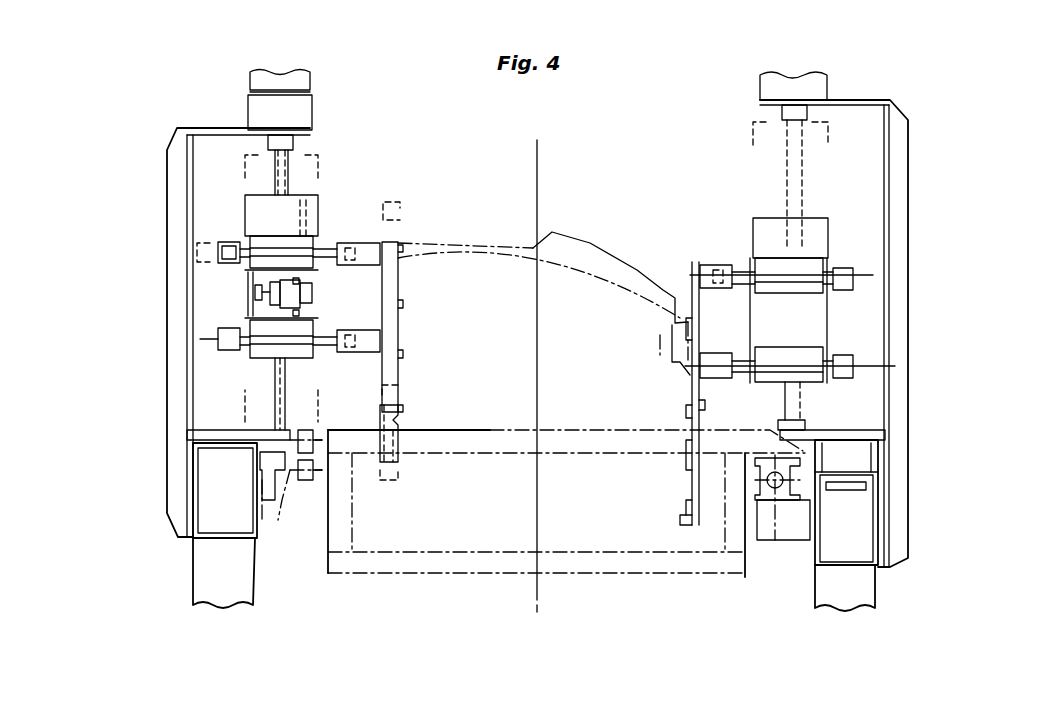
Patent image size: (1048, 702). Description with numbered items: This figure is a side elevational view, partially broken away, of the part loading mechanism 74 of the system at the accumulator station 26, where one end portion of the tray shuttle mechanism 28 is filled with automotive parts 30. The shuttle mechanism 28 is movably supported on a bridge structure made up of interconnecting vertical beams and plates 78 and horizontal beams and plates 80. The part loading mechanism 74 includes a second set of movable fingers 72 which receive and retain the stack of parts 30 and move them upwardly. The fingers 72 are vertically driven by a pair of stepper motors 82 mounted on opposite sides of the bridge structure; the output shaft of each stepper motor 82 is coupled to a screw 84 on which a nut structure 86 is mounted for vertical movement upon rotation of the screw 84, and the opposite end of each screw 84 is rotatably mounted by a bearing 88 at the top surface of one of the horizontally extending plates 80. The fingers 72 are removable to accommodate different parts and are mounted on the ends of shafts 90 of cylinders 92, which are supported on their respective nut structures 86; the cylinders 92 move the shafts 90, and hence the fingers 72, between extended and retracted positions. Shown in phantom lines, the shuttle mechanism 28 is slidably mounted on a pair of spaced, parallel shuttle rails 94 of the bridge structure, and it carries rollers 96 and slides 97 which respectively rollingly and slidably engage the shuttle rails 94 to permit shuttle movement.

The accumulator station 26 is at (663, 262).
The tray shuttle mechanism 28 is at (713, 577).
The automotive parts 30 is at (523, 252).
The second set of movable fingers 72 is at (398, 425).
The part loading mechanism 74 is at (957, 122).
The vertical beams and plates 78 is at (167, 200).
The horizontal beams and plates 80 is at (220, 128).
The stepper motors 82 is at (310, 82).
The screw 84 is at (290, 385).
The nut structure 86 is at (318, 200).
The bearing 88 is at (300, 430).
The shafts 90 is at (325, 330).
The cylinders 92 is at (262, 236).
The shuttle rails 94 is at (290, 470).
The rollers 96 is at (315, 470).
The slides 97 is at (830, 487).